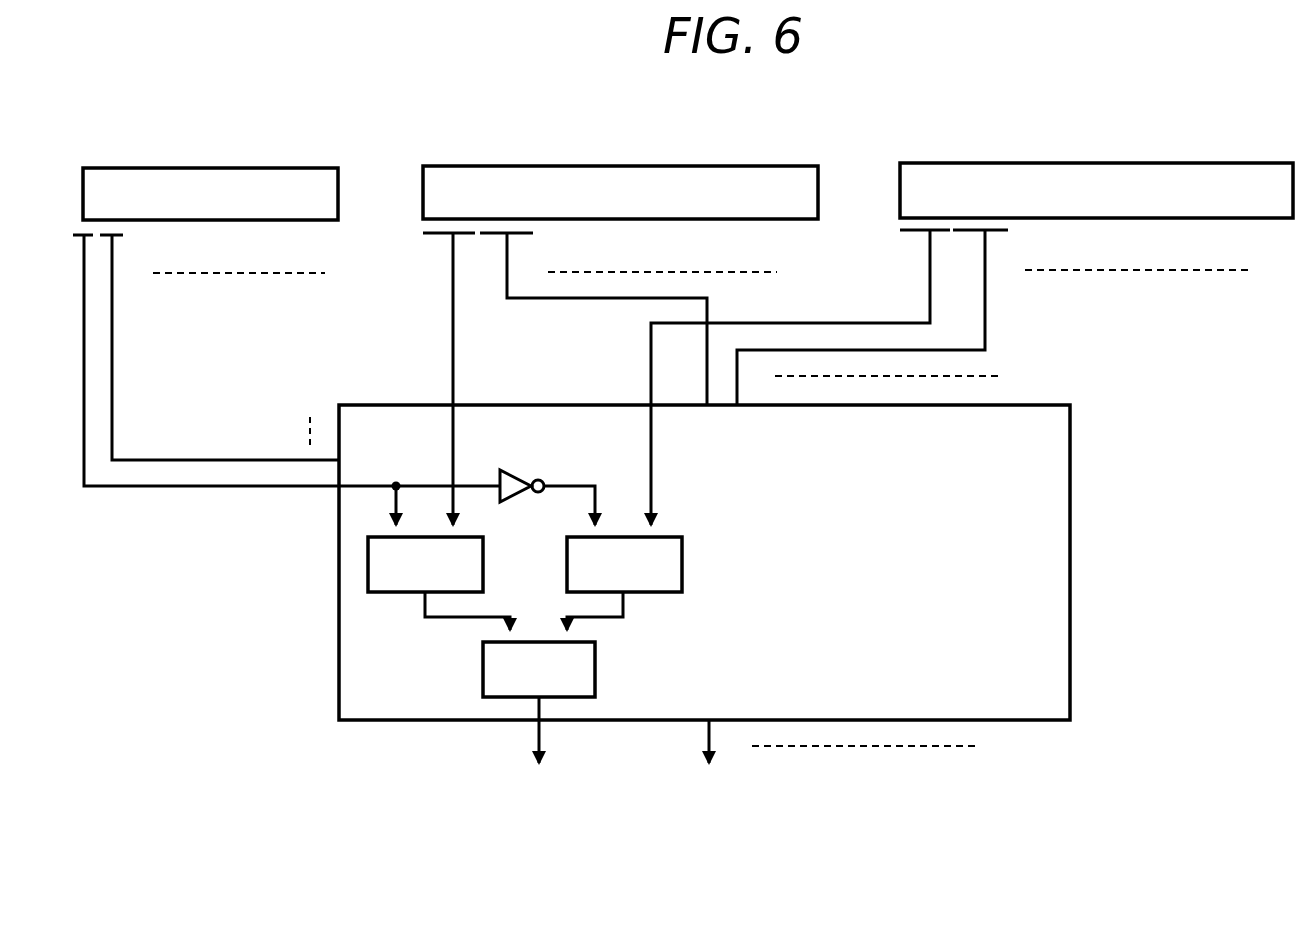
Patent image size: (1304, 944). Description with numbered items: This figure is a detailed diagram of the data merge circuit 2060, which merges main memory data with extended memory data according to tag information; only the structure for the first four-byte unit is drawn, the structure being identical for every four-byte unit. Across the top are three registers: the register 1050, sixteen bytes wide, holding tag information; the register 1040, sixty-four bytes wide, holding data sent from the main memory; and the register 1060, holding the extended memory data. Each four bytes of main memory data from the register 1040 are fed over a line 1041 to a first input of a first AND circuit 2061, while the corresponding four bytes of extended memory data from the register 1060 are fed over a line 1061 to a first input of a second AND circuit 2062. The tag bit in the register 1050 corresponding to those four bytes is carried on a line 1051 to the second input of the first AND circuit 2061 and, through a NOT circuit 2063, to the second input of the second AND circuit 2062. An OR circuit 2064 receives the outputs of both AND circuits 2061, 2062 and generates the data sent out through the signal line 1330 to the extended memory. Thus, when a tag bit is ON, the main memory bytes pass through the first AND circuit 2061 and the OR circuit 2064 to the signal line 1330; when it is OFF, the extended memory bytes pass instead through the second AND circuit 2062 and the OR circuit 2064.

The register 1050 is at (245, 168).
The register 1040 is at (630, 166).
The register 1060 is at (1092, 163).
The MM data bits 1-4 signal line 1041 is at (453, 300).
The EM data bits 1-4 signal line 1061 is at (930, 298).
The tag bit signal line 1051 is at (201, 488).
The data merge circuit 2060 is at (1073, 418).
The first AND circuit 2061 is at (368, 550).
The second AND circuit 2062 is at (682, 552).
The NOT circuit 2063 is at (510, 470).
The OR circuit 2064 is at (598, 660).
The signal line 1330 is at (528, 778).